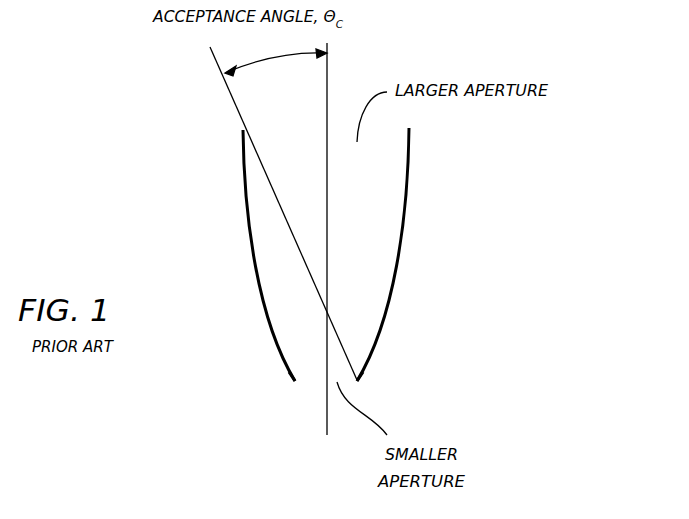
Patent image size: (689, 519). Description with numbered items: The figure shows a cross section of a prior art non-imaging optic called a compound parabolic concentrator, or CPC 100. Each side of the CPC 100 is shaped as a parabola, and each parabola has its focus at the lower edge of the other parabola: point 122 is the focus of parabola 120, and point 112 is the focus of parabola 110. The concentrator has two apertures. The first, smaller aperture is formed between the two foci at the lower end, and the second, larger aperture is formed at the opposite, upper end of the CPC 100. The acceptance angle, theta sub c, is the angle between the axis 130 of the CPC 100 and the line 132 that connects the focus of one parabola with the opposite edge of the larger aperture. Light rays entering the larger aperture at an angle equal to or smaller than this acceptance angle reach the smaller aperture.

The compound parabolic concentrator 100 is at (542, 262).
The parabola 110 is at (245, 225).
The focus of parabola 110 112 is at (357, 381).
The parabola 120 is at (408, 212).
The focus of parabola 120 122 is at (293, 382).
The axis 130 is at (328, 67).
The line 132 is at (230, 98).